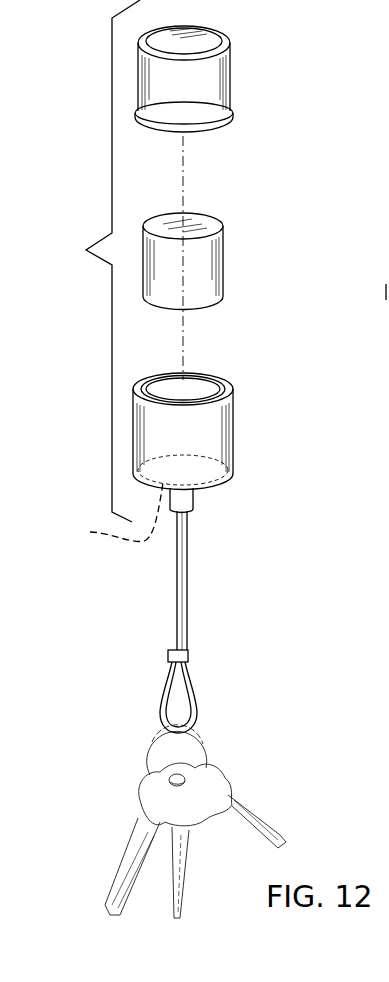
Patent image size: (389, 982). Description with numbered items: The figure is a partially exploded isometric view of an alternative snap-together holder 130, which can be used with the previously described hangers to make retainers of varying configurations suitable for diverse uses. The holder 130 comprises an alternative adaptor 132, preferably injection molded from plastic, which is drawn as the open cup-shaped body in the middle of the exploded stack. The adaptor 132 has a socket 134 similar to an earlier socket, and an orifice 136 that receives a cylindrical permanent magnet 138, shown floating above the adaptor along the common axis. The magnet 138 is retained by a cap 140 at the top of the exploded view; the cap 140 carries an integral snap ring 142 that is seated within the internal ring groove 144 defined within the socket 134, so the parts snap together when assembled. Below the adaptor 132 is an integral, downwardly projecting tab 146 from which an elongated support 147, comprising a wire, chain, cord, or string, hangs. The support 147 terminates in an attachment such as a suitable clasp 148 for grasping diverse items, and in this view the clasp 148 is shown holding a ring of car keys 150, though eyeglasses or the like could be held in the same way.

The holder 130 is at (87, 261).
The adaptor 132 is at (240, 390).
The socket 134 is at (190, 415).
The orifice 136 is at (192, 380).
The cylindrical permanent magnet 138 is at (248, 242).
The cap 140 is at (235, 81).
The integral snap ring 142 is at (235, 137).
The internal ring groove 144 is at (103, 514).
The tab 146 is at (190, 504).
The elongated support 147 is at (177, 612).
The clasp 148 is at (192, 700).
The ring of car keys 150 is at (115, 804).